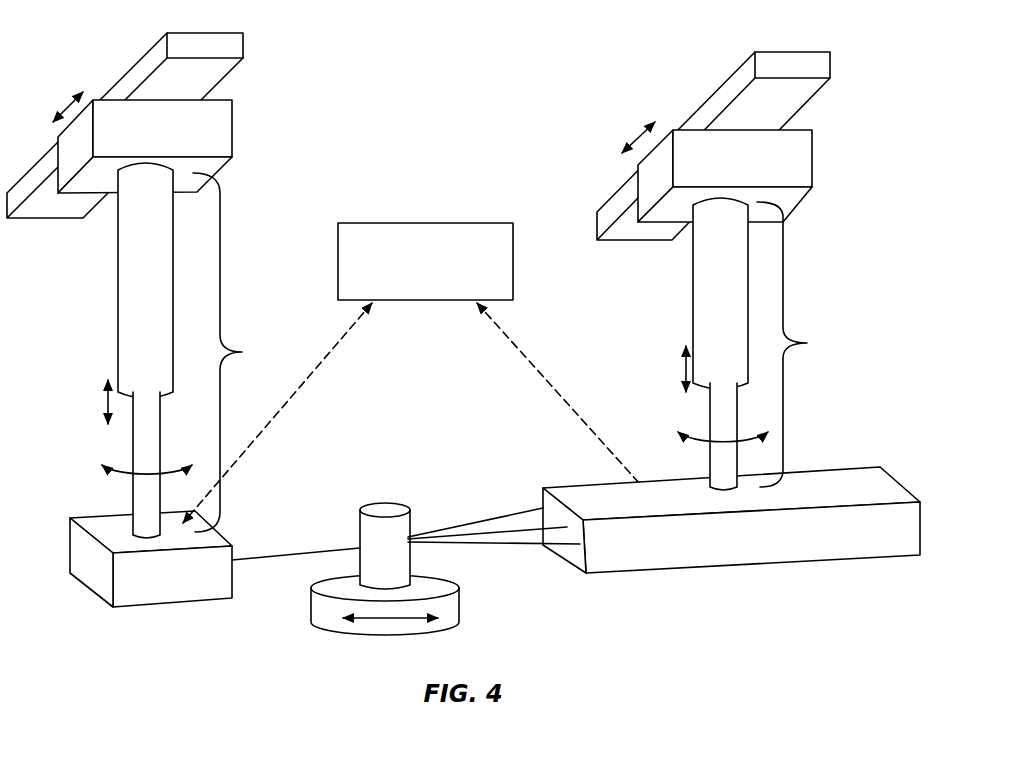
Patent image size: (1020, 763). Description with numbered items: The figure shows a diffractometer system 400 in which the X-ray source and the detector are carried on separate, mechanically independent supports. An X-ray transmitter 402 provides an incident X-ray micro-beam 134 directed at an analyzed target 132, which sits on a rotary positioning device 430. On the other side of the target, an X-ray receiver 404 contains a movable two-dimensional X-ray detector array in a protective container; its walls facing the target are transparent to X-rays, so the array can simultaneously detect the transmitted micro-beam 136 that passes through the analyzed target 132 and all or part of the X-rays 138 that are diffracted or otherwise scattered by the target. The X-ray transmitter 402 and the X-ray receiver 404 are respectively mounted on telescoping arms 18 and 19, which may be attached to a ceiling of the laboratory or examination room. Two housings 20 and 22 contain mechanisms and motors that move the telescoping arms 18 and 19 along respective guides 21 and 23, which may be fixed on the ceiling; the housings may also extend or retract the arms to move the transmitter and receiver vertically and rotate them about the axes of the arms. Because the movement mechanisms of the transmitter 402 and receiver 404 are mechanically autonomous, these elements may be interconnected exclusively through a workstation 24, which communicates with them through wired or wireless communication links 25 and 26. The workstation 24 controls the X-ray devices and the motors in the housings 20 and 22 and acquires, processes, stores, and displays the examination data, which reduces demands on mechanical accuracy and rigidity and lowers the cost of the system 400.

The telescoping arm 18 is at (189, 350).
The telescoping arm 19 is at (767, 344).
The housing 20 is at (223, 135).
The guide 21 is at (235, 45).
The housing 22 is at (797, 158).
The guide 23 is at (810, 63).
The workstation 24 is at (414, 289).
The communication link 25 is at (336, 350).
The communication link 26 is at (541, 373).
The analyzed target 132 is at (369, 562).
The incident X-ray micro-beam 134 is at (320, 550).
The transmitted micro-beam of X-ray 136 is at (482, 538).
The diffracted or scattered X-rays 138 is at (528, 545).
The diffractometer system 400 is at (624, 31).
The X-ray transmitter 402 is at (155, 589).
The X-ray receiver 404 is at (735, 549).
The rotary positioning device 430 is at (343, 633).